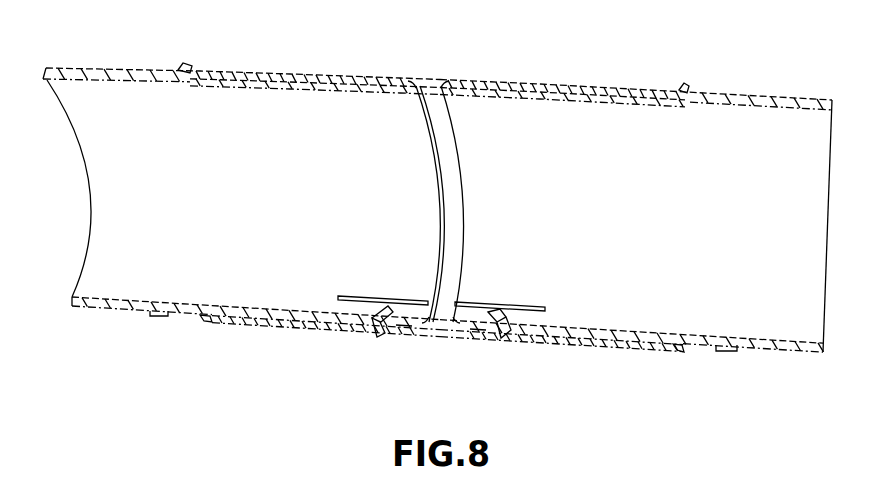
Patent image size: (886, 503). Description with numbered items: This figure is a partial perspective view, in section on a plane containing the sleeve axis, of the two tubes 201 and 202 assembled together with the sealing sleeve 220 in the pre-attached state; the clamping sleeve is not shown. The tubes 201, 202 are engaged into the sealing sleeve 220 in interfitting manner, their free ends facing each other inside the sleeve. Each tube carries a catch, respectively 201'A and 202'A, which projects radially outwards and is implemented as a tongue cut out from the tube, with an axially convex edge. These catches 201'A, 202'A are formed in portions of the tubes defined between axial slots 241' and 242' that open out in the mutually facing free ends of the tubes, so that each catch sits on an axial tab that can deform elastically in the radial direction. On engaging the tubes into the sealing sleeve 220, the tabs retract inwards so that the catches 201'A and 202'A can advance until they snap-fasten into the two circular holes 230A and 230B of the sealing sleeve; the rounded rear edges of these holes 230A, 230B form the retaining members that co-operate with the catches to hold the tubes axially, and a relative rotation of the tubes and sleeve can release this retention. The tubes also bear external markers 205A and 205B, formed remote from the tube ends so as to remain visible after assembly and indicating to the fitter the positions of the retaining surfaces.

The tube 201 is at (241, 182).
The tube 202 is at (636, 204).
The sealing sleeve 220 is at (432, 85).
The axial slot 241' is at (383, 278).
The axial slot 242' is at (500, 281).
The hole 230A is at (386, 308).
The hole 230B is at (498, 330).
The catch 201'A is at (393, 356).
The catch 202'A is at (474, 358).
The marker 205A is at (163, 317).
The marker 205B is at (727, 348).